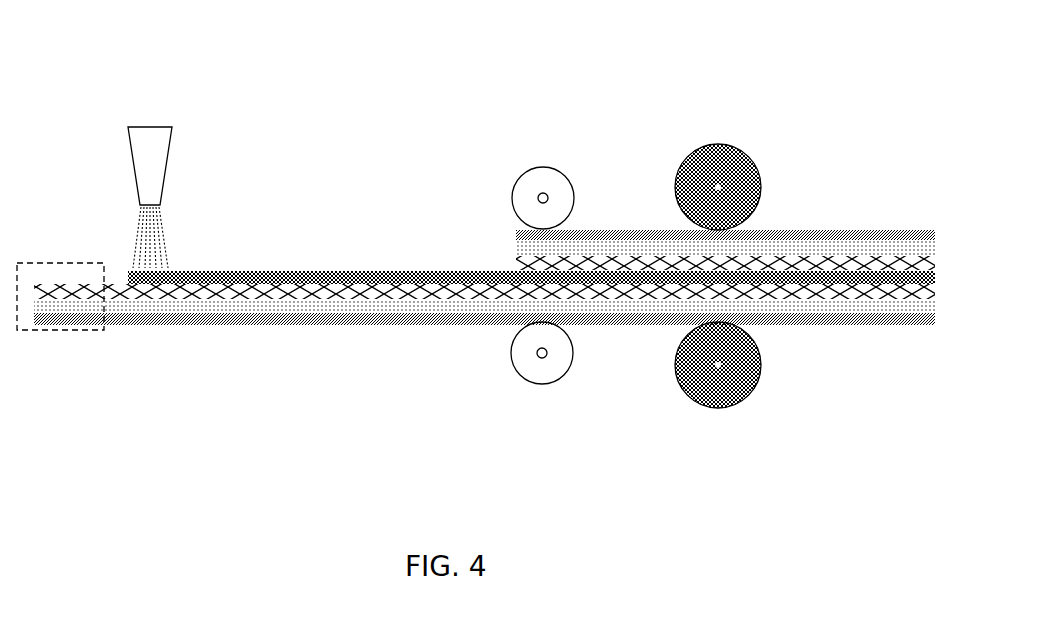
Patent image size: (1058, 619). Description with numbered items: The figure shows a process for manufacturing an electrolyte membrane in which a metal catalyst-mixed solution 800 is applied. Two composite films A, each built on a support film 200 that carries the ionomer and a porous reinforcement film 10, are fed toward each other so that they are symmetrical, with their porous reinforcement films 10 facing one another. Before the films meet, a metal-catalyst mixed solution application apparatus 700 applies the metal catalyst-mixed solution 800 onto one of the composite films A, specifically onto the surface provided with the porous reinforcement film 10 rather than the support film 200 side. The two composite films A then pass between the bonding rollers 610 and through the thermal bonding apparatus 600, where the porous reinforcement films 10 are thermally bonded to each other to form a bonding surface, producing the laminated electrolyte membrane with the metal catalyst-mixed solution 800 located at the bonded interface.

The porous reinforcement film 10 is at (37, 272).
The metal-catalyst mixed solution application apparatus 700 is at (162, 125).
The metal catalyst-mixed solution 800 is at (213, 272).
The bonding rollers 610 is at (545, 165).
The thermal bonding apparatus 600 is at (730, 143).
The support film 200 is at (278, 323).
The composite film A is at (385, 138).